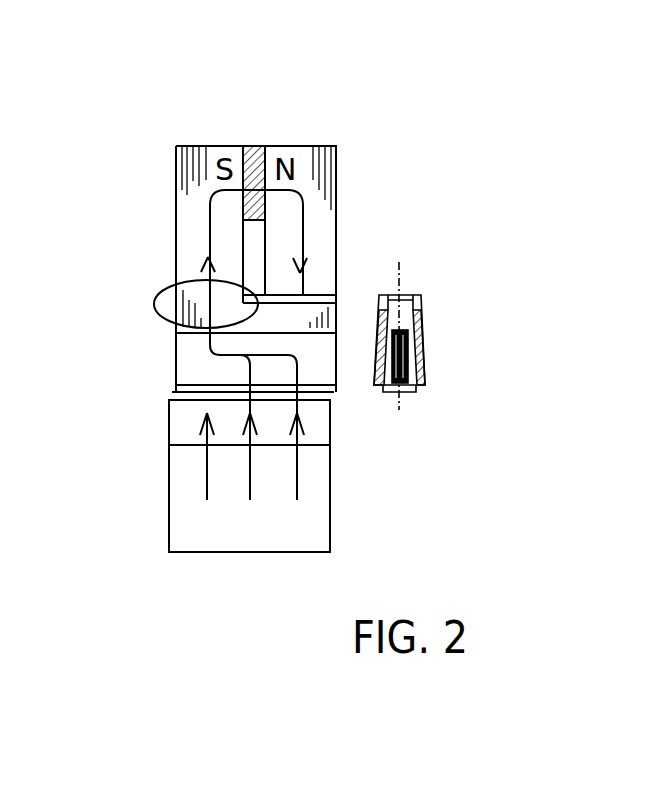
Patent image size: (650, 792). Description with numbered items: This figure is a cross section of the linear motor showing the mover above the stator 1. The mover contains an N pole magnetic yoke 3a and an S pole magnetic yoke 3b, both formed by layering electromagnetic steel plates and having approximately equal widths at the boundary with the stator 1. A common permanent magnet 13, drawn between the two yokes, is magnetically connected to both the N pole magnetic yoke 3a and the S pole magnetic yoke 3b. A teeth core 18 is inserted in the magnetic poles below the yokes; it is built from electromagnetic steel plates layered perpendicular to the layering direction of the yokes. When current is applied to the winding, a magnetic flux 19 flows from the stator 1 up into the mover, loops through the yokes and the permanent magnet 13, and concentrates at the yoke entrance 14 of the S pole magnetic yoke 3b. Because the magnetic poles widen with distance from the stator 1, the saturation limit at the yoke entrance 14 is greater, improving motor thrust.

The stator 1 is at (185, 535).
The N pole magnetic yoke 3a is at (322, 209).
The S pole magnetic yoke 3b is at (193, 205).
The common permanent magnet 13 is at (250, 145).
The yoke entrance 14 is at (154, 300).
The teeth core 18 is at (190, 363).
The magnetic flux 19 is at (188, 225).